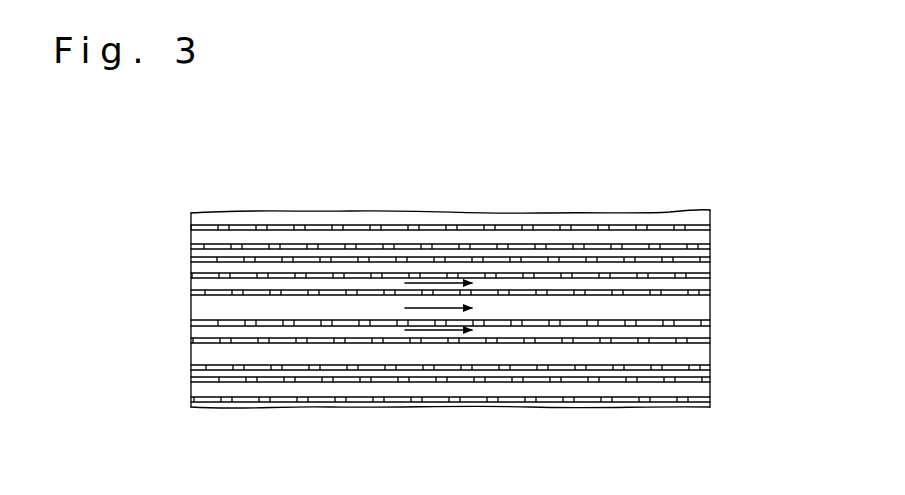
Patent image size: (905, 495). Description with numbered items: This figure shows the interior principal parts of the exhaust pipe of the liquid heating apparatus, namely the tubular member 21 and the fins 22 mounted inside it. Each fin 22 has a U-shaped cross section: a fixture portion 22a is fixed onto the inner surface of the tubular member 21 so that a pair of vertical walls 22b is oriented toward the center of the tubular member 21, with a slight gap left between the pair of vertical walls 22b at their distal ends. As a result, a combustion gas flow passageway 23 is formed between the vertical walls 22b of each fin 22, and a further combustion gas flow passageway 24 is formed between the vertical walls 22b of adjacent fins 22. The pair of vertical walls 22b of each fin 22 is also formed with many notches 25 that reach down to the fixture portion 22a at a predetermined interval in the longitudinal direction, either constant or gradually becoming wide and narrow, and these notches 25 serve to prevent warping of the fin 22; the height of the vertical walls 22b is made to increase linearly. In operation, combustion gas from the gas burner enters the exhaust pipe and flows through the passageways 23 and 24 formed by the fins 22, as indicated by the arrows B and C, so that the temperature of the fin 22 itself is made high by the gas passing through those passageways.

The tubular member 21 is at (692, 212).
The fin 22 is at (190, 270).
The fixture portion 22a is at (300, 236).
The vertical walls 22b is at (370, 250).
The combustion gas flow passageway 23 is at (695, 305).
The combustion gas flow passageway 24 is at (702, 283).
The notches 25 is at (602, 222).
The arrow B is at (414, 310).
The arrow C is at (455, 280).